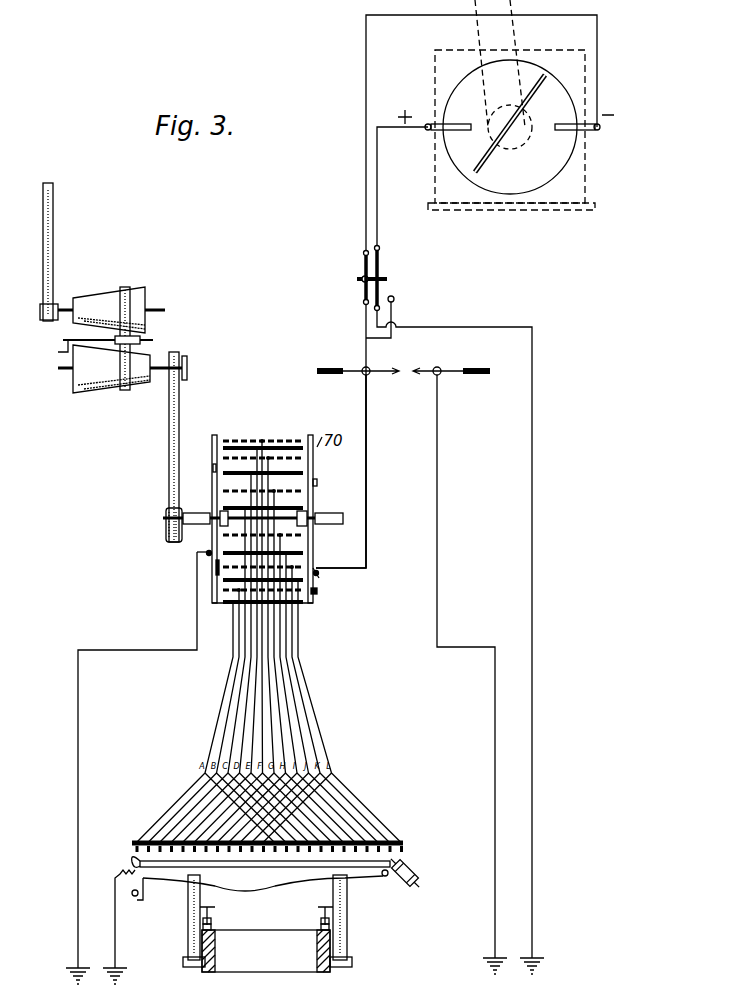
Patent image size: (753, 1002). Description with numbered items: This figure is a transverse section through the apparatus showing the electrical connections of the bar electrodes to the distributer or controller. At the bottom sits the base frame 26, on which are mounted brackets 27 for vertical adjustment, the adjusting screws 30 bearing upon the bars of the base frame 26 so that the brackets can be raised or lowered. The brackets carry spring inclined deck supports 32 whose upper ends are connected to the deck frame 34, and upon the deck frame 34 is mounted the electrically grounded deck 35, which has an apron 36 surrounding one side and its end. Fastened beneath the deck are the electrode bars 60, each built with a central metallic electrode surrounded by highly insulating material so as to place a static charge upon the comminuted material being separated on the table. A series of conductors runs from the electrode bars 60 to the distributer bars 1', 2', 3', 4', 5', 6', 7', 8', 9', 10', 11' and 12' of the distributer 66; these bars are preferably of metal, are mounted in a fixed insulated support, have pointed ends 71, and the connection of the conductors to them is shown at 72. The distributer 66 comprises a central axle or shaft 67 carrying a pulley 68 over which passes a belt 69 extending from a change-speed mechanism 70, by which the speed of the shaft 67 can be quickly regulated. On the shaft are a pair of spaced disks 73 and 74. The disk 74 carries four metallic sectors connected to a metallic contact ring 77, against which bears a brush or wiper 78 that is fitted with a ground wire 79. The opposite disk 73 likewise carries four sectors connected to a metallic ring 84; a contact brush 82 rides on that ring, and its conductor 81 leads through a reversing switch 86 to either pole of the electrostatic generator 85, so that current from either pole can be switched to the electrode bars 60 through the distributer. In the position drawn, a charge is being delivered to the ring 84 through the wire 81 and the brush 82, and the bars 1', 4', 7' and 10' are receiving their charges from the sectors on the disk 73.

The electrostatic generator 85 is at (578, 85).
The reversing switch 86 is at (360, 282).
The change-speed mechanism 70 is at (145, 330).
The belt 69 is at (172, 458).
The pulley 68 is at (168, 527).
The central axle or shaft 67 is at (199, 522).
The distributer 66 is at (213, 438).
The disk 74 is at (213, 467).
The pointed ends 71 is at (307, 475).
The disk 73 is at (312, 487).
The connection of conductors to bars 72 is at (230, 605).
The distributer bar 1' is at (273, 624).
The distributer bar 2' is at (283, 565).
The distributer bar 3' is at (280, 542).
The distributer bar 4' is at (287, 506).
The distributer bar 5' is at (275, 440).
The distributer bar 6' is at (263, 429).
The distributer bar 7' is at (263, 425).
The distributer bar 8' is at (263, 437).
The distributer bar 9' is at (263, 500).
The distributer bar 10' is at (263, 544).
The distributer bar 11' is at (232, 606).
The distributer bar 12' is at (250, 606).
The electrode bars 60 is at (405, 845).
The electrically grounded deck 35 is at (270, 861).
The apron 36 is at (403, 882).
The deck frame 34 is at (300, 881).
The spring inclined deck supports 32 is at (347, 928).
The adjusting screws 30 is at (205, 908).
The brackets 27 is at (205, 921).
The base frame 26 is at (266, 951).
The ground wire 79 is at (122, 652).
The brush or wiper 78 is at (208, 557).
The metallic contact ring 77 is at (213, 562).
The conductor 81 is at (373, 503).
The contact brush 82 is at (318, 573).
The metallic ring 84 is at (315, 592).